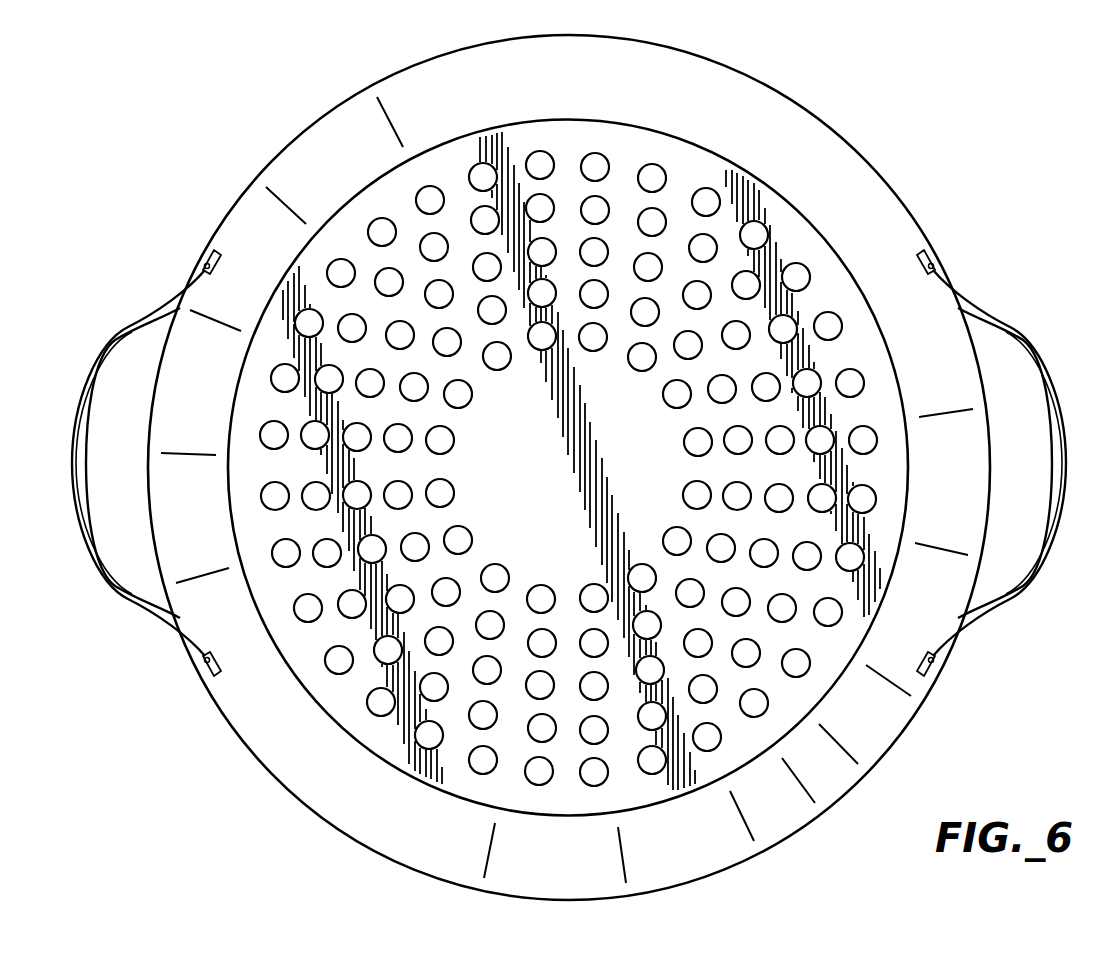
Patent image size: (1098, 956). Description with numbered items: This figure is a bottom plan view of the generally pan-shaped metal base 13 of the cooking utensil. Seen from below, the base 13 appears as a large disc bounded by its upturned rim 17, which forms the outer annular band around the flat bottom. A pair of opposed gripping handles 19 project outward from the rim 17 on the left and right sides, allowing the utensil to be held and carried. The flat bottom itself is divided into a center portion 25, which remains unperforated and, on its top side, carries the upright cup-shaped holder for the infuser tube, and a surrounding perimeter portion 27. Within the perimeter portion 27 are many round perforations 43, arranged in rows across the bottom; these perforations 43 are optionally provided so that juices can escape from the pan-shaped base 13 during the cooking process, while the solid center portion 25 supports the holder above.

The pan-shaped metal base 13 is at (870, 155).
The upturned rim 17 is at (800, 125).
The gripping handles 19 is at (1053, 450).
The center portion 25 is at (584, 477).
The perimeter portion 27 is at (328, 695).
The round perforations 43 is at (797, 277).